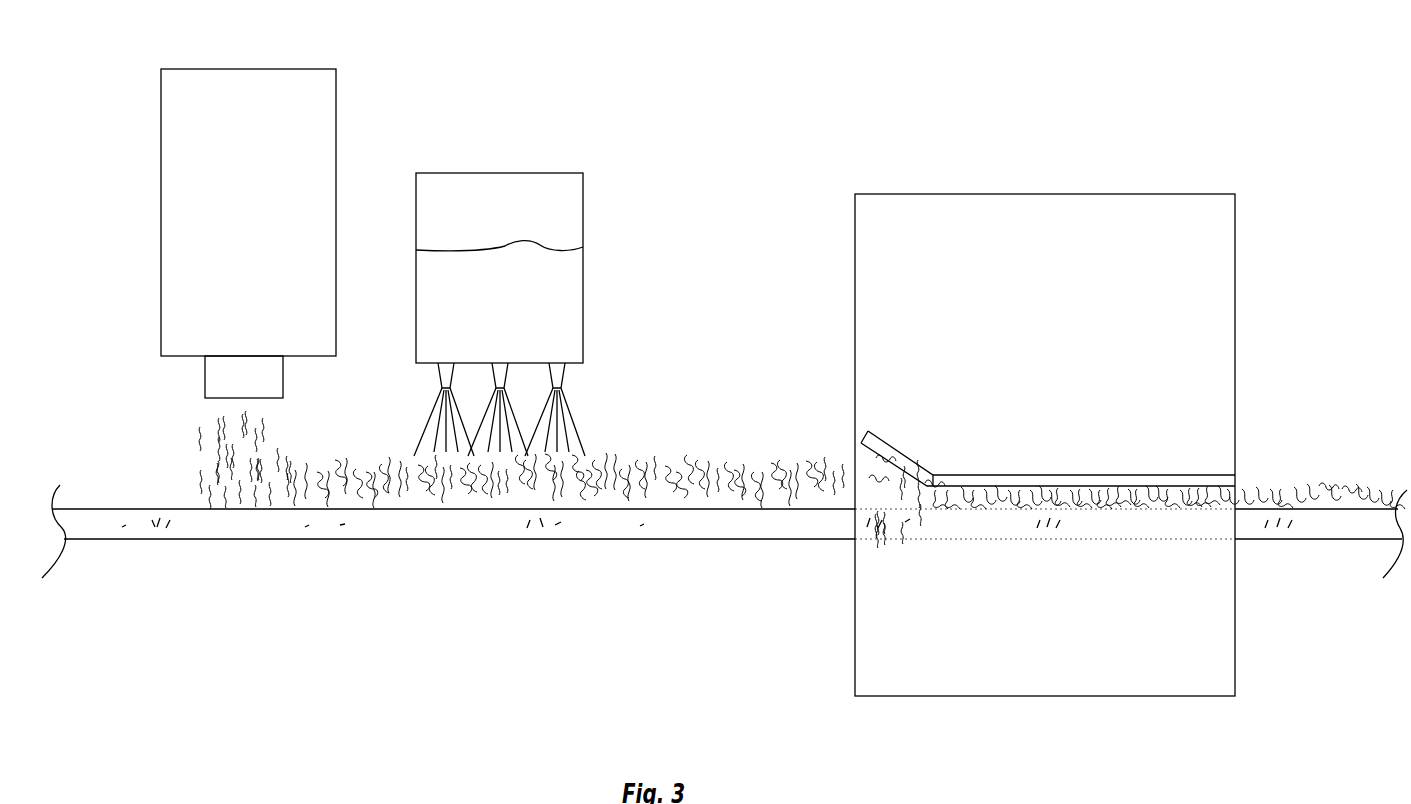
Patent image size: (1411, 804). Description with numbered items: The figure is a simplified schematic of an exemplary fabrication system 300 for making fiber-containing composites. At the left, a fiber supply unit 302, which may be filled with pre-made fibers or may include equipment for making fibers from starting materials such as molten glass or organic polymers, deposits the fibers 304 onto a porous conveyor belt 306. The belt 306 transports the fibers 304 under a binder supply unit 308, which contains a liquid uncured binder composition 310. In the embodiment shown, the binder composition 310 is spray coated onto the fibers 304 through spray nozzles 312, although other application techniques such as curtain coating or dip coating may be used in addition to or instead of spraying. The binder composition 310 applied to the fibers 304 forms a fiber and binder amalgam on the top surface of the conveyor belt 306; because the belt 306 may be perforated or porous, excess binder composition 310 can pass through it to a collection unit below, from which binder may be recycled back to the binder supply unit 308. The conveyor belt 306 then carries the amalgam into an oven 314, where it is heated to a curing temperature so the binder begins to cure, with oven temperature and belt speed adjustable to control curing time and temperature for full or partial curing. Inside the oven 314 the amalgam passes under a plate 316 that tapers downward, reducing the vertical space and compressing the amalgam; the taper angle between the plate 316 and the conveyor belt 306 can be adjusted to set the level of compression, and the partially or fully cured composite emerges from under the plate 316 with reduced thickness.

The fabrication system 300 is at (171, 31).
The fiber supply unit 302 is at (336, 127).
The fibers 304 is at (183, 444).
The porous conveyor belt 306 is at (225, 530).
The binder supply unit 308 is at (583, 208).
The binder composition 310 is at (555, 312).
The spray nozzles 312 is at (578, 378).
The oven 314 is at (1235, 258).
The plate 316 is at (912, 457).